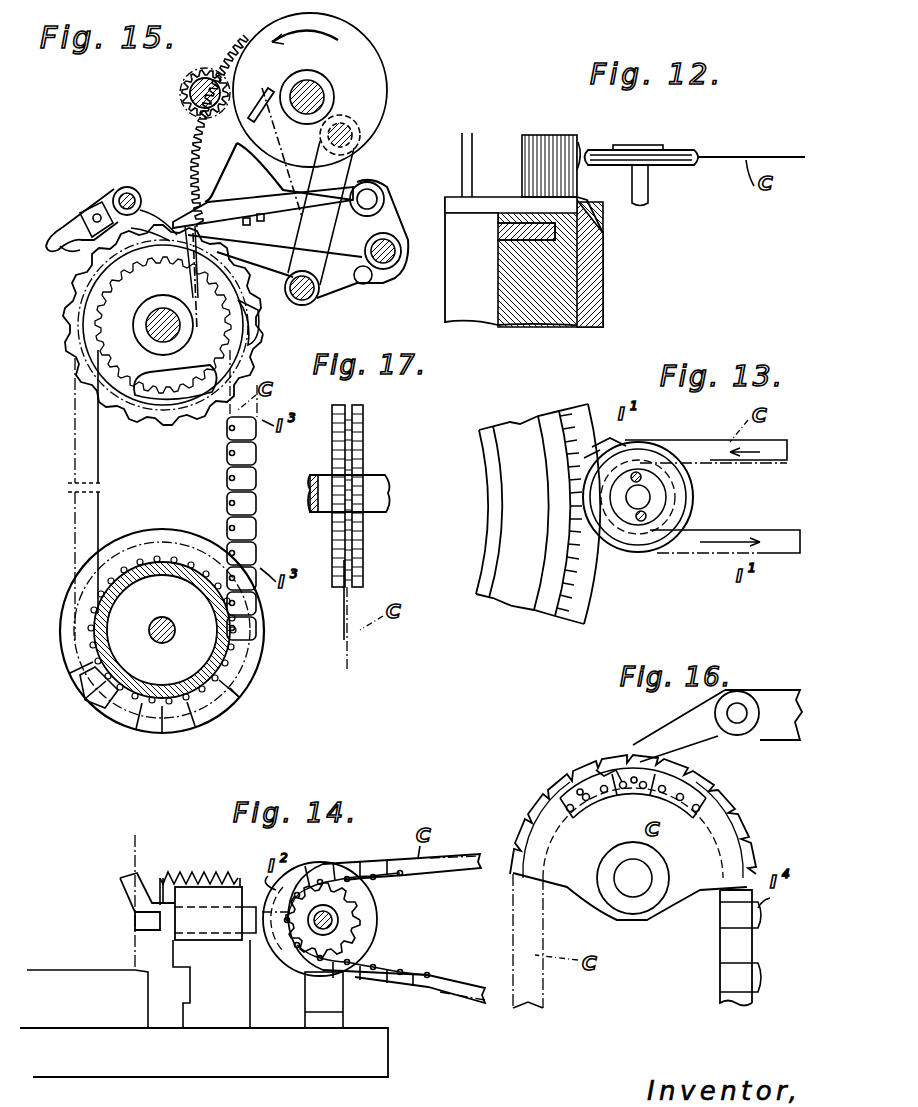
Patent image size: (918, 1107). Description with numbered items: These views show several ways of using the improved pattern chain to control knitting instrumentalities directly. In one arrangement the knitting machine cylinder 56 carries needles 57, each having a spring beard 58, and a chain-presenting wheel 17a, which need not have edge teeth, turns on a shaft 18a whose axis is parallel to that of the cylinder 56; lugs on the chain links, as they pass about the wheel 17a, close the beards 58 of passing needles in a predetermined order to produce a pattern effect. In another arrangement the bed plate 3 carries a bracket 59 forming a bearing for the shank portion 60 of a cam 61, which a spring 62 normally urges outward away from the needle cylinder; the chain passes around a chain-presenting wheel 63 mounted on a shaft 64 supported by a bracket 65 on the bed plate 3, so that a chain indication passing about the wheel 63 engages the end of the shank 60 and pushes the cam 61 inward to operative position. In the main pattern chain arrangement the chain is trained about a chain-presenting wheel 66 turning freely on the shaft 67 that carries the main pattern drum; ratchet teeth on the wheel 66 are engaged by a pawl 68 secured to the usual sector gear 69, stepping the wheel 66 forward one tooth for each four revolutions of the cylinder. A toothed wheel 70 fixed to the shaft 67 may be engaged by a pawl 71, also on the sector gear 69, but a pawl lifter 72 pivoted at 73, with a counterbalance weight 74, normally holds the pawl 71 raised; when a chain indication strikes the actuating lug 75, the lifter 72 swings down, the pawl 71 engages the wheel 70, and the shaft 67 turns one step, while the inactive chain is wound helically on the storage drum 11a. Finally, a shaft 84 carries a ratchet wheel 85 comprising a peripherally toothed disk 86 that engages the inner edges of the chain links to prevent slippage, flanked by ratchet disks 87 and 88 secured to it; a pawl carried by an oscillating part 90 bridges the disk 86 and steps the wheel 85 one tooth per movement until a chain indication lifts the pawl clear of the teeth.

In FIG. 14, the bed plate 3 is at (200, 1062).
In FIG. 15, the storage drum 11a is at (276, 698).
In FIG. 12, the chain-presenting wheel 17a is at (678, 150).
In FIG. 12, the shaft 18a is at (648, 190).
In FIG. 12, the knitting machine cylinder 56 is at (540, 318).
In FIG. 13, the knitting machine cylinder 56 is at (524, 592).
In FIG. 12, the needles 57 is at (578, 190).
In FIG. 13, the needles 57 is at (568, 564).
In FIG. 12, the spring beard 58 is at (588, 150).
In FIG. 14, the bracket 59 is at (240, 980).
In FIG. 14, the shank portion 60 is at (162, 932).
In FIG. 14, the cam 61 is at (135, 893).
In FIG. 14, the spring 62 is at (205, 874).
In FIG. 14, the chain-presenting wheel 63 is at (372, 922).
In FIG. 14, the shaft 64 is at (335, 912).
In FIG. 14, the bracket 65 is at (332, 998).
In FIG. 15, the chain-presenting wheel 66 is at (272, 308).
In FIG. 15, the shaft 67 is at (158, 318).
In FIG. 15, the pawl 68 is at (332, 272).
In FIG. 15, the sector gear 69 is at (206, 152).
In FIG. 16, the sector gear 69 is at (705, 738).
In FIG. 15, the toothed wheel 70 is at (72, 310).
In FIG. 15, the pawl 71 is at (244, 210).
In FIG. 15, the pawl lifter 72 is at (142, 222).
In FIG. 15, the pivot 73 is at (127, 193).
In FIG. 15, the counterbalance weight 74 is at (62, 230).
In FIG. 15, the actuating lug 75 is at (73, 256).
In FIG. 17, the shaft 84 is at (376, 506).
In FIG. 16, the shaft 84 is at (633, 878).
In FIG. 17, the ratchet wheel 85 is at (363, 486).
In FIG. 16, the ratchet wheel 85 is at (672, 765).
In FIG. 17, the peripherally toothed disk 86 is at (352, 455).
In FIG. 16, the peripherally toothed disk 86 is at (603, 770).
In FIG. 17, the disk 87 is at (340, 408).
In FIG. 16, the disk 87 is at (617, 762).
In FIG. 17, the disk 88 is at (362, 408).
In FIG. 16, the disk 88 is at (538, 832).
In FIG. 16, the part 90 is at (778, 696).